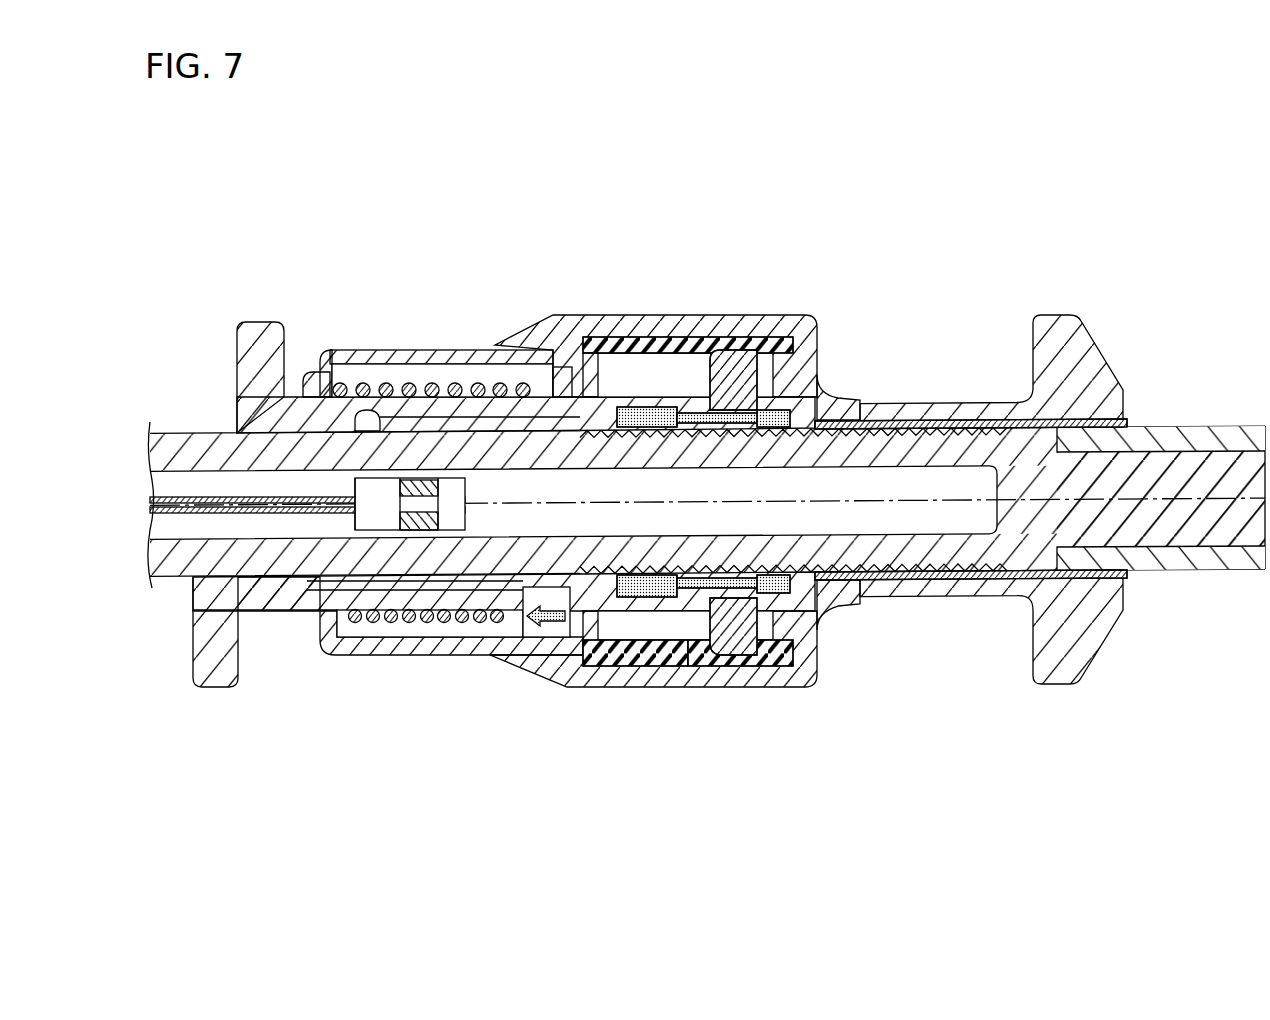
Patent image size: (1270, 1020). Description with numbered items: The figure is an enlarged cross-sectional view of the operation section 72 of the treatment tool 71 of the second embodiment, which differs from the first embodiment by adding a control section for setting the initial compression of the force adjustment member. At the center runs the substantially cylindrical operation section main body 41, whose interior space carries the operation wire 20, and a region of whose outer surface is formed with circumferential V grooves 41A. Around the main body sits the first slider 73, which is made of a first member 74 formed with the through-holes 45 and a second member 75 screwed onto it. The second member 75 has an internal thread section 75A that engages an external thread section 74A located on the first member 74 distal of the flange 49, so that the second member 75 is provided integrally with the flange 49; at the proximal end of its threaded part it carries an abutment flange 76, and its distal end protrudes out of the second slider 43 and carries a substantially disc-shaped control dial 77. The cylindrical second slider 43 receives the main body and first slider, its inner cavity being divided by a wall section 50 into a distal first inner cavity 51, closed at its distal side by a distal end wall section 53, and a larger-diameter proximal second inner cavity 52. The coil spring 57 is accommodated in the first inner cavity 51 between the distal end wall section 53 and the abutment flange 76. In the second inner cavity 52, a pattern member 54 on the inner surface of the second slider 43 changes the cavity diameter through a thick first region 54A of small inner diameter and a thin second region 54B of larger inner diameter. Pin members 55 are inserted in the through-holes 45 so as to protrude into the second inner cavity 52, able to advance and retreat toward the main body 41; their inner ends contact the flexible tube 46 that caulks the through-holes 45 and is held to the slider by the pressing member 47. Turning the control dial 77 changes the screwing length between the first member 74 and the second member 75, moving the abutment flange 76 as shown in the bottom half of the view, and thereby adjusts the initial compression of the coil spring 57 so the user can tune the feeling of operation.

The operation wire 20 is at (178, 510).
The operation section main body 41 is at (1181, 540).
The V grooves 41A is at (866, 428).
The second slider 43 is at (925, 403).
The through-holes 45 is at (765, 410).
The flexible tube 46 is at (832, 396).
The pressing member 47 is at (659, 596).
The flange 49 is at (592, 385).
The wall section 50 is at (622, 383).
The first inner cavity 51 is at (431, 366).
The second inner cavity 52 is at (644, 338).
The distal end wall section 53 is at (324, 372).
The pattern member 54 is at (678, 345).
The first region 54A is at (605, 666).
The second region 54B is at (778, 664).
The pin members 55 is at (719, 365).
The coil spring 57 is at (459, 388).
The treatment tool 71 is at (1028, 202).
The operation section 72 is at (866, 284).
The first slider 73 is at (978, 421).
The first member 74 is at (648, 370).
The external thread section 74A is at (442, 590).
The second member 75 is at (305, 385).
The internal thread section 75A is at (367, 412).
The abutment flange 76 is at (562, 378).
The control dial 77 is at (268, 333).